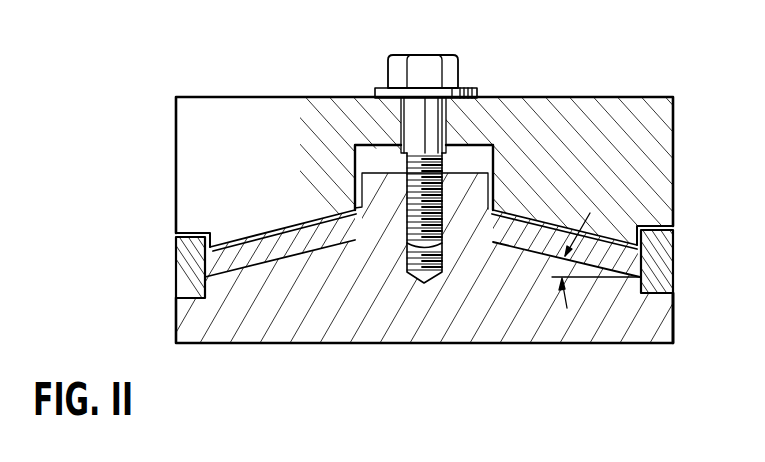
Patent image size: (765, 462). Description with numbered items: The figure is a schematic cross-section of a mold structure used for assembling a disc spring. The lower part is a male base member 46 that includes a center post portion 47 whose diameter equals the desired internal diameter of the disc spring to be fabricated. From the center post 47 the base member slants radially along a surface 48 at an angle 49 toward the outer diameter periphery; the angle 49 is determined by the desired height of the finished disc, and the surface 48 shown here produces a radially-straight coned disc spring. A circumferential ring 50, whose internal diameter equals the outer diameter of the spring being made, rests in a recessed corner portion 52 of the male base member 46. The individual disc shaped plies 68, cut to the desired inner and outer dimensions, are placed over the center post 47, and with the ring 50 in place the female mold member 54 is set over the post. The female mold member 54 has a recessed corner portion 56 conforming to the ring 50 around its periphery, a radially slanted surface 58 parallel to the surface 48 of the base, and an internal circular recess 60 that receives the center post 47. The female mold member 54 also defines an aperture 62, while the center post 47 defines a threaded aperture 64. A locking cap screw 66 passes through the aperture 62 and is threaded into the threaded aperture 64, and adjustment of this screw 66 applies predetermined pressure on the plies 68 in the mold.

The male base member 46 is at (342, 295).
The center post portion 47 is at (372, 196).
The radially slanted surface 48 is at (520, 250).
The angle 49 is at (593, 278).
The circumferential ring 50 is at (663, 261).
The recessed corner portion 52 is at (640, 297).
The female mold member 54 is at (594, 113).
The recessed corner portion 56 is at (637, 222).
The radially slanted surface 58 is at (533, 218).
The internal circular recess 60 is at (353, 150).
The aperture 62 is at (402, 122).
The threaded aperture 64 is at (403, 225).
The locking cap screw 66 is at (458, 61).
The disc shaped plies 68 is at (277, 252).